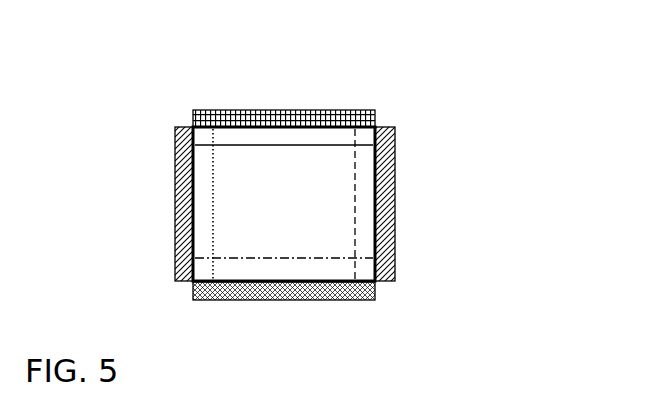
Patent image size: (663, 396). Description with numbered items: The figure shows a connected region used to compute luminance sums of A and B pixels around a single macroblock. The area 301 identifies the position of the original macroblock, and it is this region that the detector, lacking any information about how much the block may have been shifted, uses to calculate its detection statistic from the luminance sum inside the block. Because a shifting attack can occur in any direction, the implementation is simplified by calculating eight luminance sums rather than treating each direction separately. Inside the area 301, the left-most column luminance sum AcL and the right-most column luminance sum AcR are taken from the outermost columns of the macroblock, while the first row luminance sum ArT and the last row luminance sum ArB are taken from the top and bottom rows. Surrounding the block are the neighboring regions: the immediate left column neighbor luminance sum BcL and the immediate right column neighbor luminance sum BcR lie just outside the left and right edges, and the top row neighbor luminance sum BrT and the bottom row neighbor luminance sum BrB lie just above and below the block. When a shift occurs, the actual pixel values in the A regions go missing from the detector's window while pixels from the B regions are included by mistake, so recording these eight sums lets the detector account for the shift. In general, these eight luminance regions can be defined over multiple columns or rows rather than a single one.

The area 301 is at (396, 127).
The top row neighbor luminance sum BrT is at (302, 113).
The bottom row neighbor luminance sum BrB is at (303, 293).
The immediate left column neighbor luminance sum BcL is at (172, 183).
The immediate right column neighbor luminance sum BcR is at (401, 184).
The first row luminance sum ArT is at (282, 140).
The last row luminance sum ArB is at (308, 262).
The left-most column luminance sum AcL is at (213, 222).
The right-most column luminance sum AcR is at (354, 198).